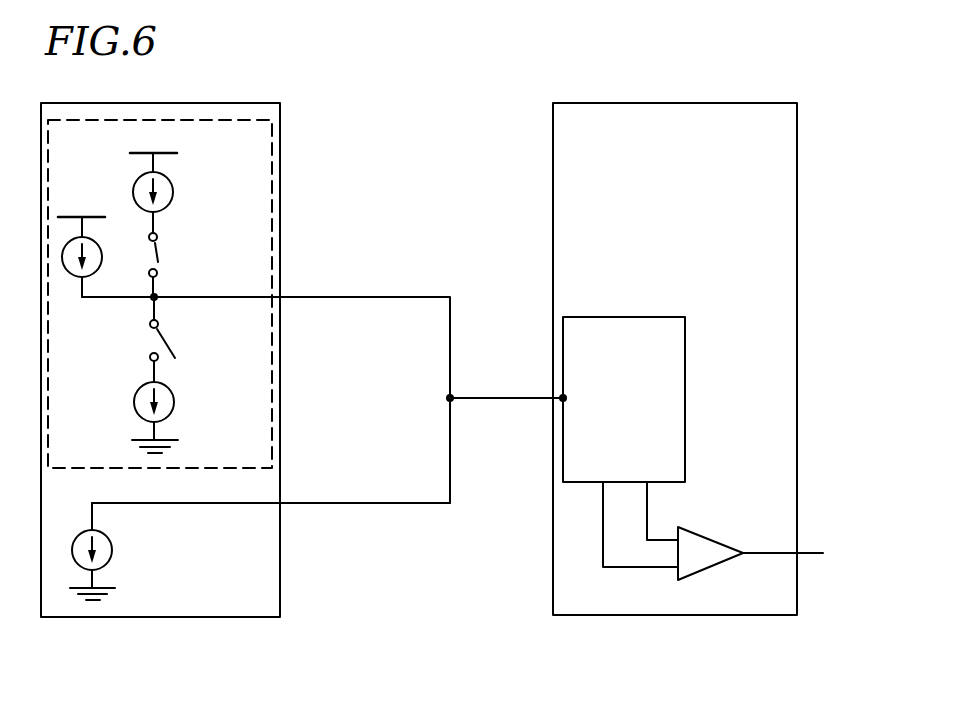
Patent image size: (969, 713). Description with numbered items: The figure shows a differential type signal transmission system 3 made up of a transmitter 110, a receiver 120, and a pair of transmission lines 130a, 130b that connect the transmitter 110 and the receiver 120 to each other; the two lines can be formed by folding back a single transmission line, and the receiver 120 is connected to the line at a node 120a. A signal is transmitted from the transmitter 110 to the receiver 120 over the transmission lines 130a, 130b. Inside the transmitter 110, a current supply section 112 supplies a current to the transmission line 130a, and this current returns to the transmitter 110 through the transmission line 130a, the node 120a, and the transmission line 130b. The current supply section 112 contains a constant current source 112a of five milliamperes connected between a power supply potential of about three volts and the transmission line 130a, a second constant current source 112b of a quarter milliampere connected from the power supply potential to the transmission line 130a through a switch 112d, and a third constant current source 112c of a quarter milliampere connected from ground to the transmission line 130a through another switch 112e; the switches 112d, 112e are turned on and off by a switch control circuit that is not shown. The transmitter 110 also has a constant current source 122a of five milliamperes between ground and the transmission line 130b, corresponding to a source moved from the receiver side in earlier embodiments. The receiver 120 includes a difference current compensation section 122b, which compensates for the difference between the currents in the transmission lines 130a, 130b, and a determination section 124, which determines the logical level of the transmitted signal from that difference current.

The signal transmission system 3 is at (413, 627).
The transmitter 110 is at (280, 122).
The current supply section 112 is at (272, 440).
The constant current source 112a is at (98, 242).
The constant current source 112b is at (173, 188).
The constant current source 112c is at (174, 402).
The switch 112d is at (158, 252).
The switch 112e is at (170, 343).
The receiver 120 is at (553, 125).
The node 120a is at (452, 401).
The constant current source 122a is at (111, 547).
The difference current compensation section 122b is at (563, 345).
The determination section 124 is at (710, 567).
The transmission line 130a is at (400, 297).
The transmission line 130b is at (340, 505).